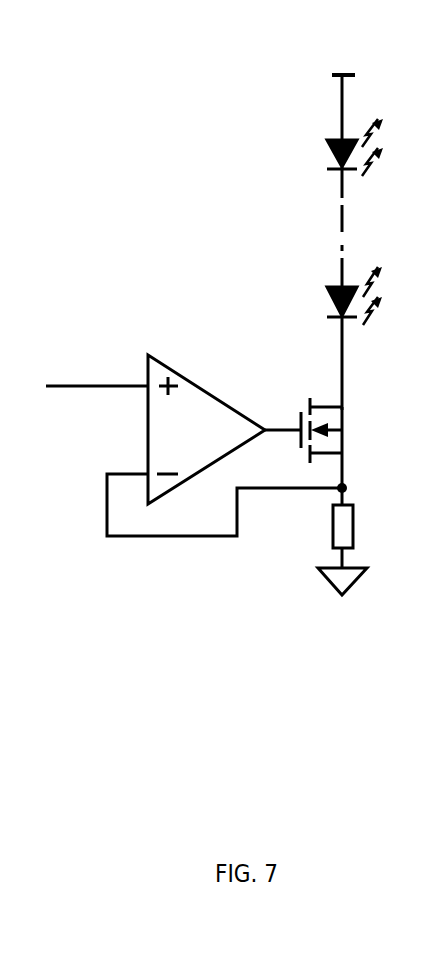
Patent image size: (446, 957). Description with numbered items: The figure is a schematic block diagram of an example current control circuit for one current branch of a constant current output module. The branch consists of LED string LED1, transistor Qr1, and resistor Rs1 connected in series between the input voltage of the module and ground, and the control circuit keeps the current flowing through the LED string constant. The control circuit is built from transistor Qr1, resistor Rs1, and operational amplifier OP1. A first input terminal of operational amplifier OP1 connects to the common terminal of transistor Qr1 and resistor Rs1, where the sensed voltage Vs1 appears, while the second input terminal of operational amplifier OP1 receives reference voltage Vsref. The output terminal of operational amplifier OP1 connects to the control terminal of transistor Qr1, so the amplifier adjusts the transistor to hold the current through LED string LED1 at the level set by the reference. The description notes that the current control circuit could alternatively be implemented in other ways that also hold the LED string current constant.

The LED string LED1 is at (321, 264).
The operational amplifier OP1 is at (224, 429).
The transistor Qr1 is at (351, 451).
The resistor Rs1 is at (360, 550).
The reference voltage Vsref is at (97, 369).
The sense voltage Vs1 is at (227, 505).